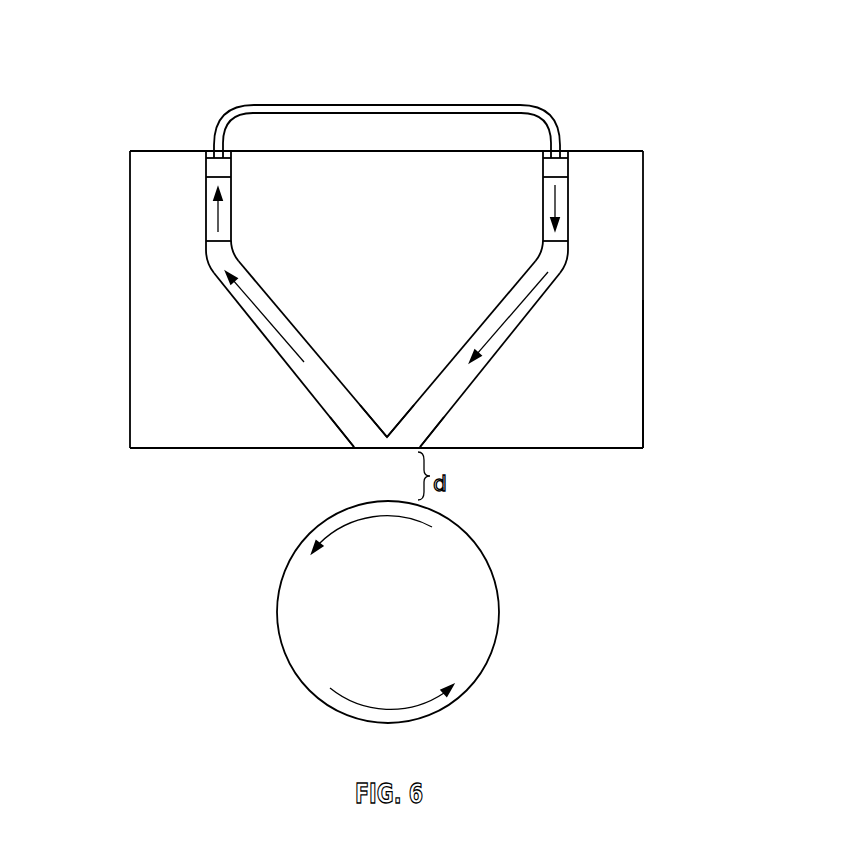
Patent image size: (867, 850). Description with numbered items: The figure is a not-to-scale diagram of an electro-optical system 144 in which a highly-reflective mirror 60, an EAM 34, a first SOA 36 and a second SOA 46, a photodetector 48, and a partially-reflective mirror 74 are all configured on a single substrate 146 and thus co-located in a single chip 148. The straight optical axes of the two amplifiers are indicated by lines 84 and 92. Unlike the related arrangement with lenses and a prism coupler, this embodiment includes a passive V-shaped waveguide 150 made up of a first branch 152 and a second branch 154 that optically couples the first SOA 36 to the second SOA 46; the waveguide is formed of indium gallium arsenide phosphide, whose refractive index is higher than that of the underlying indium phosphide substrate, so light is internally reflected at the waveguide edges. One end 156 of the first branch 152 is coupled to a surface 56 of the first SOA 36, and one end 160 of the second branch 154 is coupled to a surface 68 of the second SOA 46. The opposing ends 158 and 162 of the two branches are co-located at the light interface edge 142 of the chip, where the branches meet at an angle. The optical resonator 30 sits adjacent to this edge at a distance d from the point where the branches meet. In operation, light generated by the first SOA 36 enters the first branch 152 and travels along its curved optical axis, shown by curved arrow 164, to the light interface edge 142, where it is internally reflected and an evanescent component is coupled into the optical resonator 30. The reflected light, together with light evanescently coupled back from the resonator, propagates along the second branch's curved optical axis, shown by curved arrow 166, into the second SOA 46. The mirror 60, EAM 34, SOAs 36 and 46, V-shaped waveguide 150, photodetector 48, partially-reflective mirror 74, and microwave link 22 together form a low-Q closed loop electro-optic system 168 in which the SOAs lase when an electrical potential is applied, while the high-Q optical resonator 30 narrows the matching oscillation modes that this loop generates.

The electro-optical system 144 is at (137, 53).
The microwave link 22 is at (476, 105).
The photodetector 48 is at (215, 168).
The partially-reflective mirror 74 is at (206, 152).
The highly-reflective mirror 60 is at (568, 152).
The EAM 34 is at (560, 168).
The second SOA 46 is at (212, 185).
The first SOA 36 is at (562, 185).
The optical axis of the second SOA 92 is at (212, 203).
The optical axis of the first SOA 84 is at (562, 203).
The surface of the second SOA 68 is at (206, 241).
The surface of the first SOA 56 is at (568, 241).
The end of second branch 160 is at (216, 254).
The end of first branch 156 is at (557, 253).
The second branch 154 is at (240, 318).
The first branch 152 is at (530, 307).
The curved optical axis of the second branch 166 is at (283, 343).
The curved optical axis of the first branch 164 is at (490, 340).
The opposing end of second branch 162 is at (372, 440).
The opposing end of first branch 158 is at (433, 412).
The V-shaped waveguide 150 is at (280, 390).
The light interface edge 142 is at (540, 448).
The single substrate 146 is at (632, 418).
The single chip 148 is at (647, 378).
The low-Q closed loop electro-optic system 168 is at (92, 375).
The optical resonator 30 is at (499, 612).